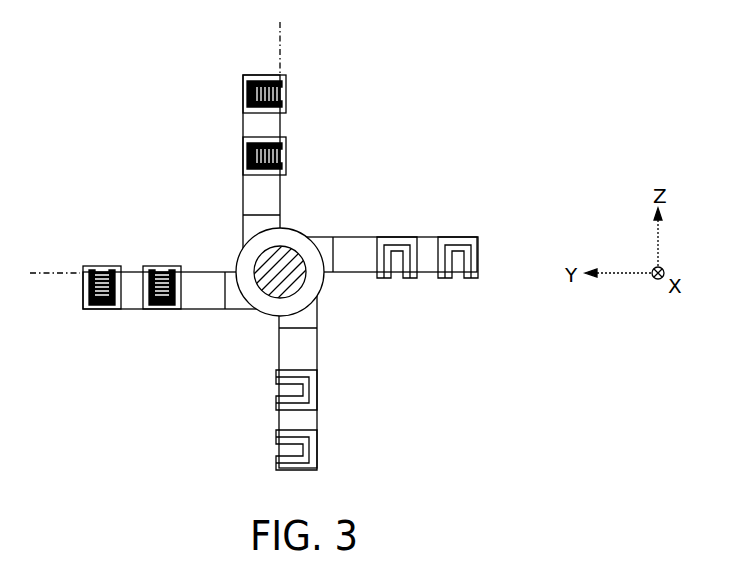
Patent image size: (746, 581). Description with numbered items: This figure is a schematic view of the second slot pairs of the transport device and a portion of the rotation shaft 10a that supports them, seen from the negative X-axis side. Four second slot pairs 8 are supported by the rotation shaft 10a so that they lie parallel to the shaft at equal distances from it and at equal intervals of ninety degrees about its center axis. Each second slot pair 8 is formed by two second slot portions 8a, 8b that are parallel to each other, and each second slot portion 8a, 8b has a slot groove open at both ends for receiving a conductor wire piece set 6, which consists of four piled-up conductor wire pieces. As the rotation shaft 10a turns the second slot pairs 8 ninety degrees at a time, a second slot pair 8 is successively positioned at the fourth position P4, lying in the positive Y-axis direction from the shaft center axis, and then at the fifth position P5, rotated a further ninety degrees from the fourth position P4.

The conductor wire piece set 6 is at (102, 267).
The second slot pair 8 is at (280, 272).
The second slot portion 8a is at (160, 310).
The second slot portion 8b is at (177, 358).
The rotation shaft 10a is at (290, 248).
The fourth position P4 is at (55, 270).
The fifth position P5 is at (283, 49).